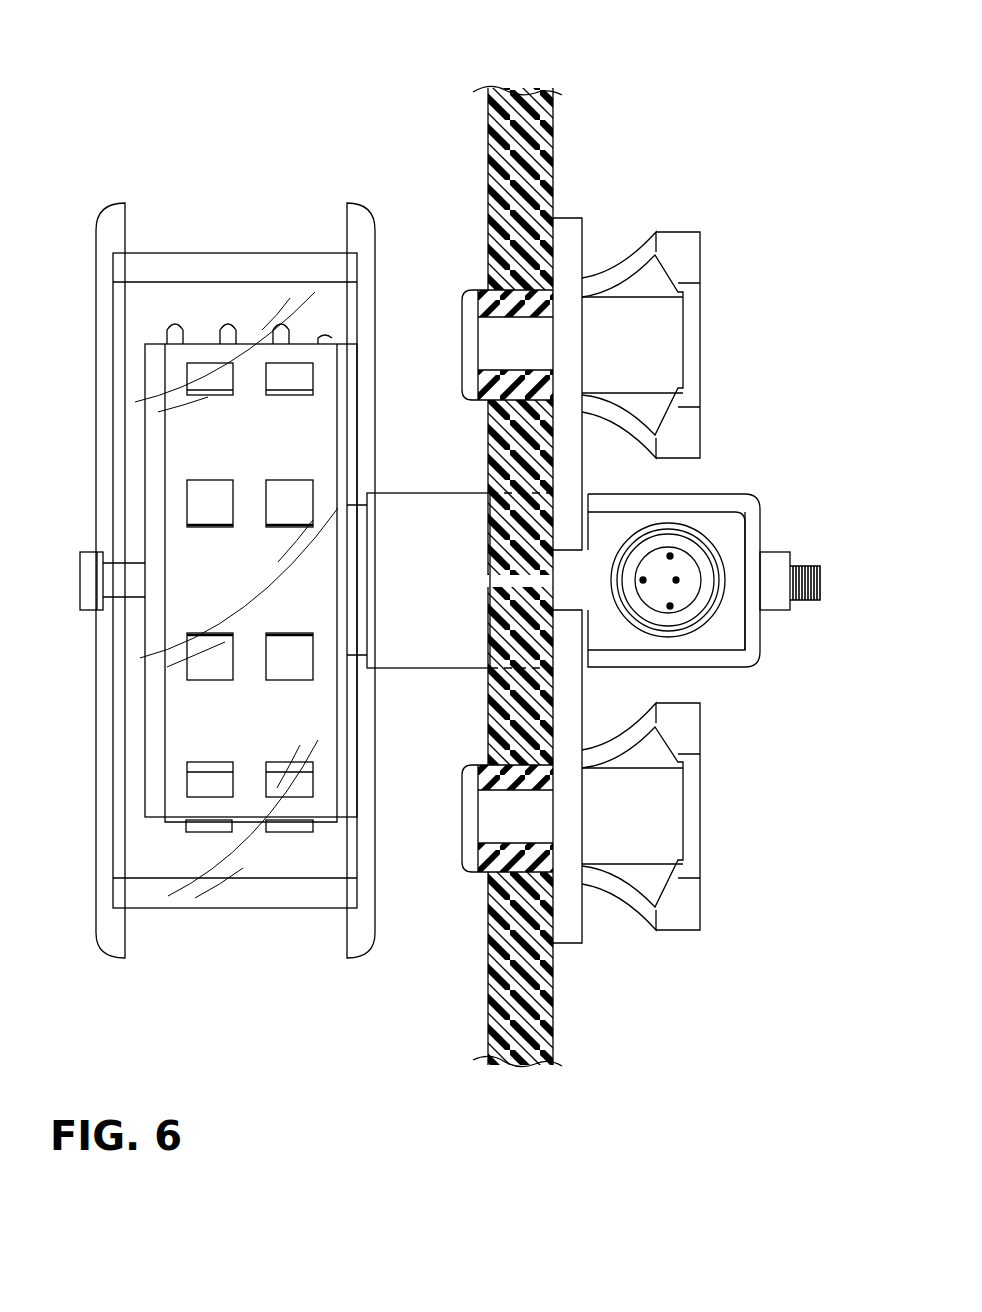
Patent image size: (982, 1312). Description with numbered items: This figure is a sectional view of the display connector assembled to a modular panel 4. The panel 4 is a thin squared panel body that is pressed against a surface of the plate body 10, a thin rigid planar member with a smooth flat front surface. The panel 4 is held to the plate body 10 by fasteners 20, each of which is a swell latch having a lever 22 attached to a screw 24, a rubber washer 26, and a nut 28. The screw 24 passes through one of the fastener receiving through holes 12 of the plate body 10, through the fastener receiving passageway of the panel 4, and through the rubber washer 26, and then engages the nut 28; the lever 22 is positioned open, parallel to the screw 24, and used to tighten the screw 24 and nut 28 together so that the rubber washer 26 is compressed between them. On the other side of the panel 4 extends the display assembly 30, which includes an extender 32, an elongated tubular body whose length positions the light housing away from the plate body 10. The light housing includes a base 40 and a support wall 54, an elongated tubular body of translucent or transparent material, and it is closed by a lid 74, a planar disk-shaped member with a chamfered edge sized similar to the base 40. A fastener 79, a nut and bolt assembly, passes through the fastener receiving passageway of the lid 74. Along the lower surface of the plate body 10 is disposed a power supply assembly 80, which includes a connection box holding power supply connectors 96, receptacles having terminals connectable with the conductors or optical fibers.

The modular panel 4 is at (513, 98).
The plate body 10 is at (568, 223).
The fastener receiving through holes 12 is at (585, 887).
The fastener 20 is at (707, 293).
The lever 22 is at (697, 253).
The screw 24 is at (530, 348).
The rubber washer 26 is at (483, 302).
The nut 28 is at (465, 316).
The display assembly 30 is at (242, 663).
The extender 32 is at (445, 593).
The base 40 is at (367, 957).
The support wall 54 is at (233, 908).
The lid 74 is at (105, 942).
The fastener 79 is at (815, 570).
The power supply assembly 80 is at (757, 500).
The power supply connectors 96 is at (670, 626).